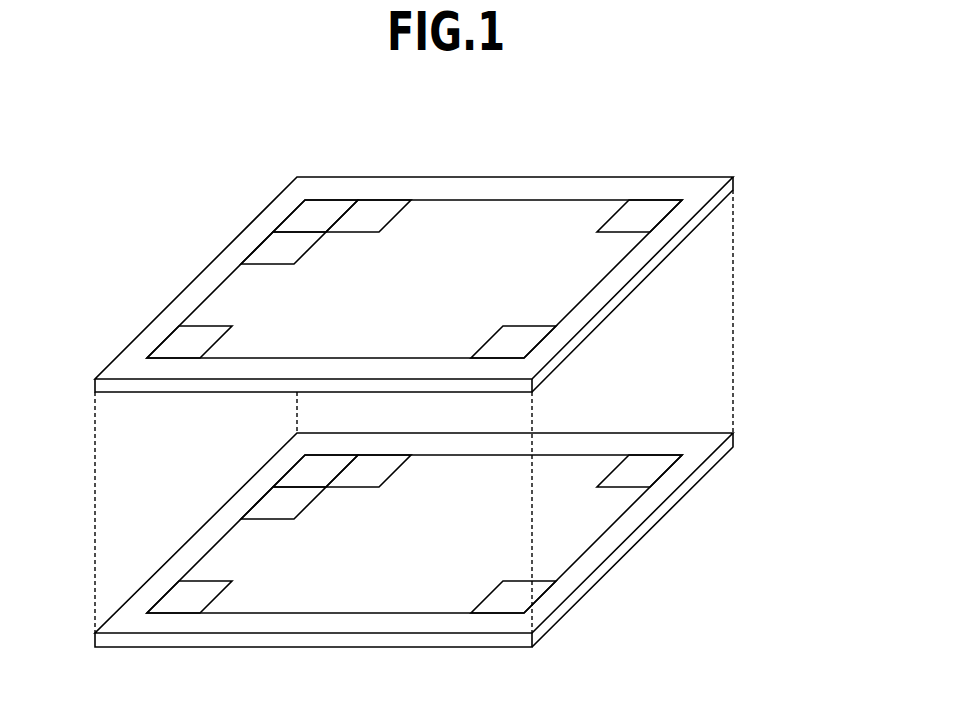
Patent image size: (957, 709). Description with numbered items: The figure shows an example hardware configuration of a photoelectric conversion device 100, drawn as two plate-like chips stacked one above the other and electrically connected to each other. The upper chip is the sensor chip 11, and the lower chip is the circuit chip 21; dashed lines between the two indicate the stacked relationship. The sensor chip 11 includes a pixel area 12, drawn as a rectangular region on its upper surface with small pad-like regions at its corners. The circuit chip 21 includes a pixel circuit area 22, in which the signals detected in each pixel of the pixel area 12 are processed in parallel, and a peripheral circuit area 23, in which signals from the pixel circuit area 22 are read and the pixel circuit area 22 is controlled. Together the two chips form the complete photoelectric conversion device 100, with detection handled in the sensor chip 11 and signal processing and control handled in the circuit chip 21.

The photoelectric conversion device 100 is at (823, 240).
The sensor chip 11 is at (668, 258).
The pixel area 12 is at (242, 298).
The circuit chip 21 is at (672, 508).
The pixel circuit area 22 is at (243, 545).
The peripheral circuit area 23 is at (158, 593).